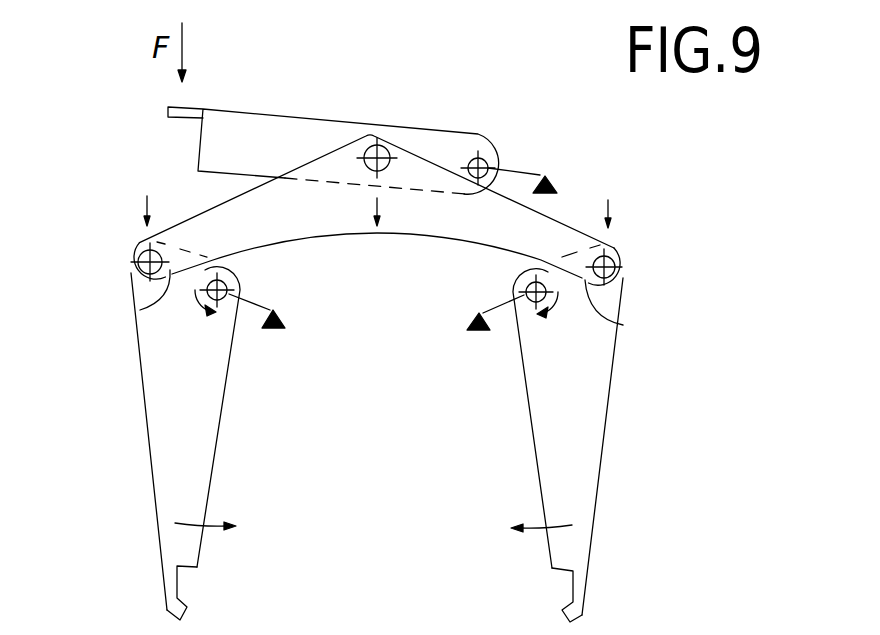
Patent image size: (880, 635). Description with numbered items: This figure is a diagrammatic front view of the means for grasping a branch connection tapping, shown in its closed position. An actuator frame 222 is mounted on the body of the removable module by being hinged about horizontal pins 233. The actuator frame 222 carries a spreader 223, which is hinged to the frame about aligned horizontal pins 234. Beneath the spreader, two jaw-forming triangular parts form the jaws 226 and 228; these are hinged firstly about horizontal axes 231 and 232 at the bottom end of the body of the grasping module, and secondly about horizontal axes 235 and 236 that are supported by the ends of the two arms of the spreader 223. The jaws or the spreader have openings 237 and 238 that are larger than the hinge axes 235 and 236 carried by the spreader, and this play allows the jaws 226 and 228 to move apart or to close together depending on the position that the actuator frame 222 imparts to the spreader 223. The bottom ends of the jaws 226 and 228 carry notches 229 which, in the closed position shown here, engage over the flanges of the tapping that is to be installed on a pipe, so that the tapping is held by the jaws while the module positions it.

The actuator frame 222 is at (255, 125).
The spreader 223 is at (548, 230).
The jaw 226 is at (172, 462).
The jaw 228 is at (578, 430).
The notch 229 is at (178, 590).
The horizontal axis 231 is at (225, 285).
The horizontal axis 232 is at (527, 285).
The horizontal pin 233 is at (482, 162).
The horizontal pin 234 is at (382, 148).
The horizontal axis 235 is at (140, 260).
The horizontal axis 236 is at (613, 262).
The opening 237 is at (140, 310).
The opening 238 is at (623, 325).